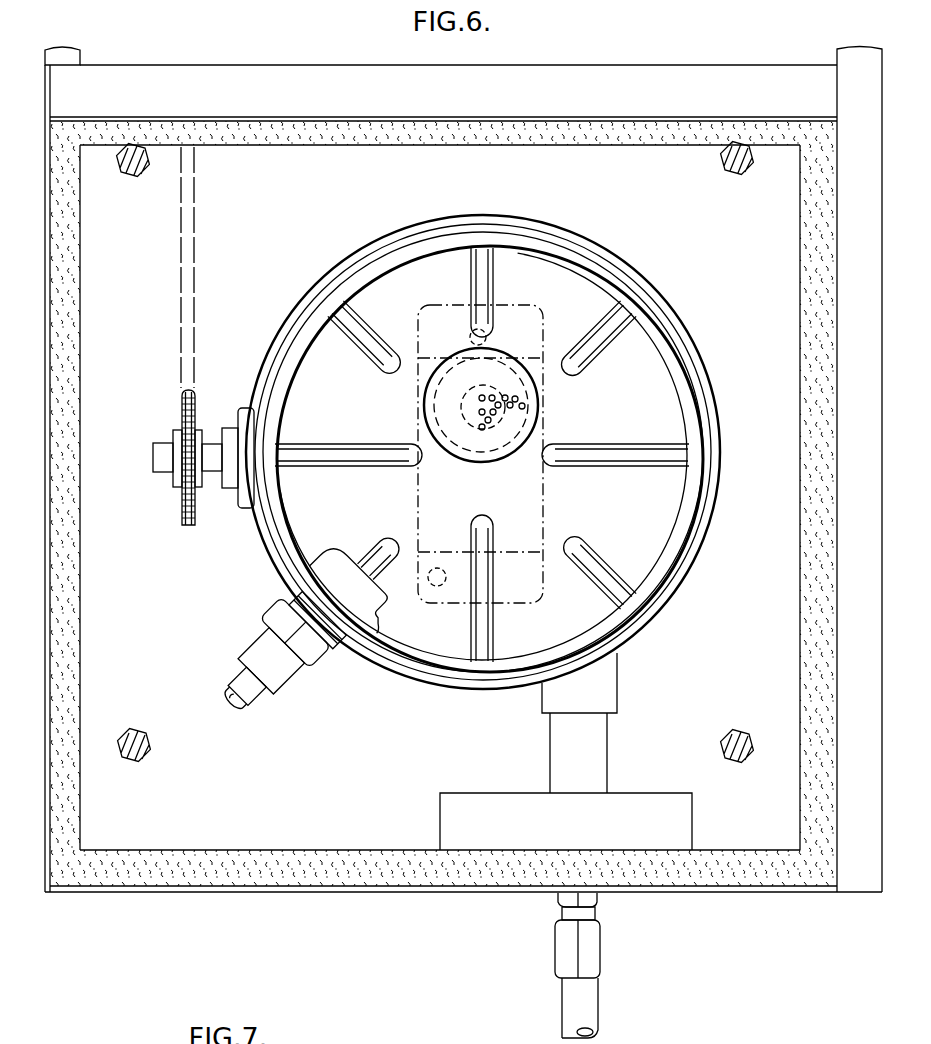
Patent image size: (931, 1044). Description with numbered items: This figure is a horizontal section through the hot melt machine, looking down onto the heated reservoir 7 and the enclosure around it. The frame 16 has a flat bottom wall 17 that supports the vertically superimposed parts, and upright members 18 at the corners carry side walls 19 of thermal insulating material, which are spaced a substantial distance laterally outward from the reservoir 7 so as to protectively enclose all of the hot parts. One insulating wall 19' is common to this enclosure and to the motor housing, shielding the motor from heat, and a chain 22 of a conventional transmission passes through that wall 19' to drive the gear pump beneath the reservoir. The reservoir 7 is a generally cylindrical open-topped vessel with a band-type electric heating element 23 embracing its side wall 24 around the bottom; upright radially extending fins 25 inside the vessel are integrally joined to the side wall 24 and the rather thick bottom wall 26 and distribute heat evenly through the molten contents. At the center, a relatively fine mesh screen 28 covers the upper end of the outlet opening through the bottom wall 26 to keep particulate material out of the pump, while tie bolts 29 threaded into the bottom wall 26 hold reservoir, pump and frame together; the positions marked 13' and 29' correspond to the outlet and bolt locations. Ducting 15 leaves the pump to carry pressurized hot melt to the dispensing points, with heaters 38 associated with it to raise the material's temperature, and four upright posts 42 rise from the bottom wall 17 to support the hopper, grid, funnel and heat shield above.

The reservoir 7 is at (598, 272).
The shaft end 13' is at (479, 413).
The ducting 15 is at (640, 695).
The frame 16 is at (41, 575).
The bottom wall 17 is at (340, 753).
The upright members 18 is at (80, 894).
The side walls 19 is at (443, 515).
The insulating wall 19' is at (443, 158).
The chain 22 is at (205, 258).
The band-type electric heating element 23 is at (665, 311).
The side wall 24 is at (672, 357).
The fins 25 is at (473, 284).
The bottom wall 26 is at (500, 500).
The screen 28 is at (517, 407).
The tie bolt 29 is at (506, 332).
The pin hole 29' is at (432, 603).
The heaters 38 is at (614, 666).
The upright posts 42 is at (133, 177).